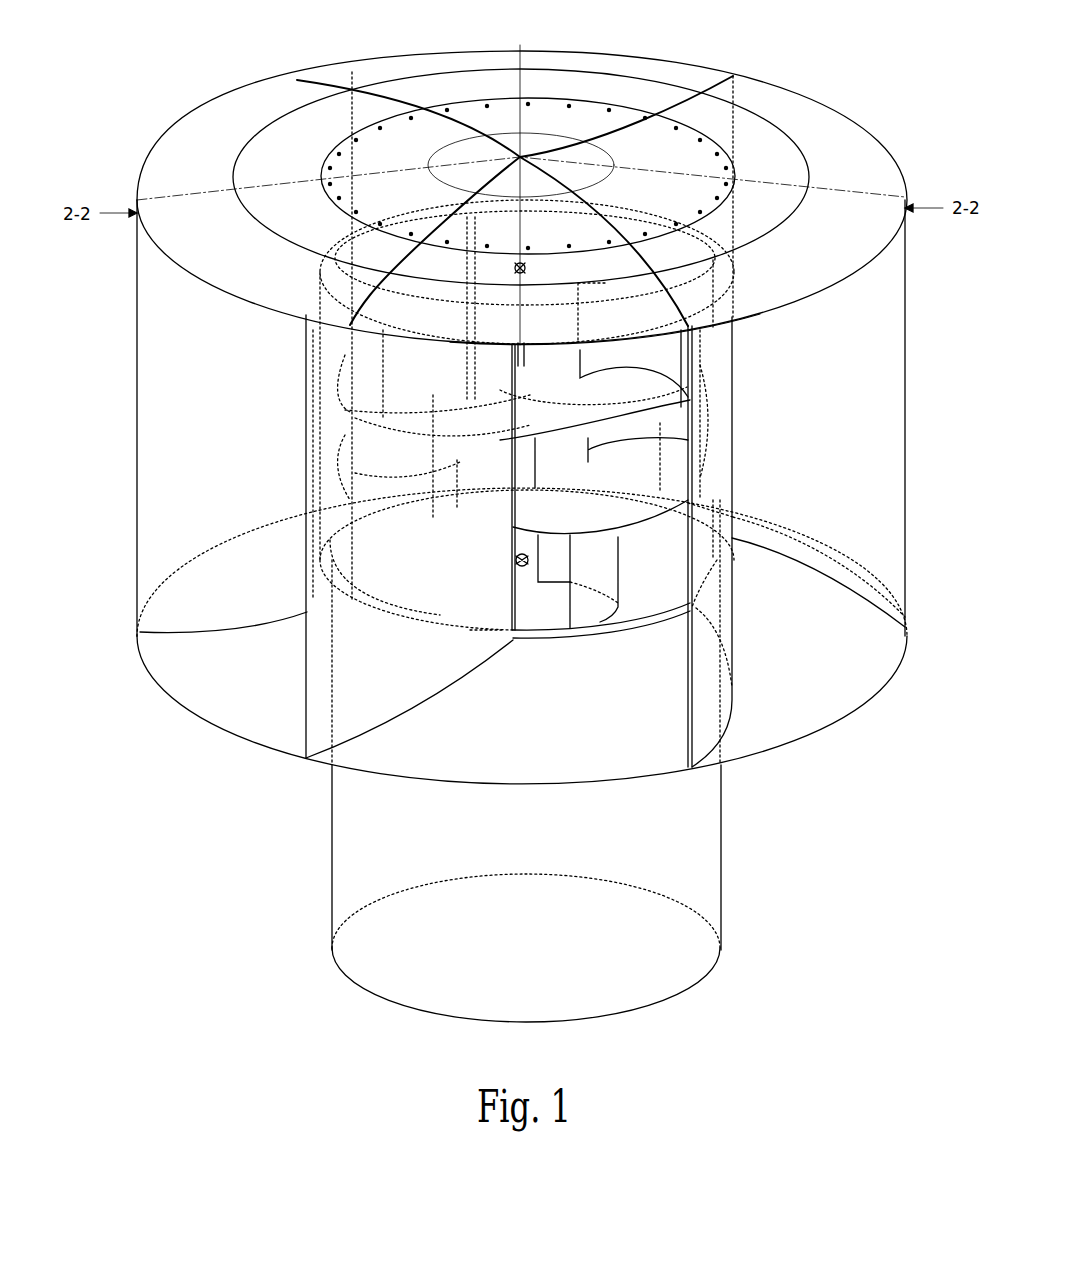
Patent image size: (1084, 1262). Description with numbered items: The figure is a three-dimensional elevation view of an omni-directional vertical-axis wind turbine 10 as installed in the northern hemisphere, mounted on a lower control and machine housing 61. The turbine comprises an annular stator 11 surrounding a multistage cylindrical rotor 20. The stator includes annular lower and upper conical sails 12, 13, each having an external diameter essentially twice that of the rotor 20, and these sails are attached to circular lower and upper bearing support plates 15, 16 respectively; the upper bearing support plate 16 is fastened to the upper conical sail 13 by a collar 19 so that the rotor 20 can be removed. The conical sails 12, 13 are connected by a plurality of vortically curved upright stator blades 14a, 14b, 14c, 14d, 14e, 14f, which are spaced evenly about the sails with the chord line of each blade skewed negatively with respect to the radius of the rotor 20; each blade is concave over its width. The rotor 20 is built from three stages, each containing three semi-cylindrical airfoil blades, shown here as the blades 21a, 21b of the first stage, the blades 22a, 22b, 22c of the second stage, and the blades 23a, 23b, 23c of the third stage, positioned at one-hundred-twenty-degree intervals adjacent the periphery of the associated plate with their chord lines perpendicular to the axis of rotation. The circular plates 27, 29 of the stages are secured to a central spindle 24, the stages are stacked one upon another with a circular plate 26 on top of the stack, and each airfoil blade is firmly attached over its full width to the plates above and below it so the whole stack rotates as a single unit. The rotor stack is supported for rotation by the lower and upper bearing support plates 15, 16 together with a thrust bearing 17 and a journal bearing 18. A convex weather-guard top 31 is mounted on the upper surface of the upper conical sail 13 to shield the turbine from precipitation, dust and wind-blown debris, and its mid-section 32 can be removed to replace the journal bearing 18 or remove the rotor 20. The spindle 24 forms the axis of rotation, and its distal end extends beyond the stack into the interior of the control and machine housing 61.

The omni-directional vertical-axis wind turbine 10 is at (520, 44).
The annular stator 11 is at (137, 431).
The lower conical sail 12 is at (870, 690).
The upper conical sail 13 is at (838, 272).
The stator blade 14a is at (690, 686).
The stator blade 14b is at (905, 540).
The stator blade 14c is at (735, 92).
The stator blade 14d is at (345, 86).
The stator blade 14e is at (138, 552).
The stator blade 14f is at (305, 690).
The lower bearing support plate 15 is at (552, 642).
The upper bearing support plate 16 is at (640, 218).
The thrust bearing 17 is at (524, 570).
The journal bearing 18 is at (512, 268).
The collar 19 is at (430, 207).
The cylindrical rotor 20 is at (500, 236).
The semi-cylindrical airfoil blade 21a is at (578, 318).
The semi-cylindrical airfoil blade 21b is at (465, 270).
The semi-cylindrical airfoil blade 22a is at (584, 425).
The semi-cylindrical airfoil blade 22b is at (382, 358).
The semi-cylindrical airfoil blade 22c is at (432, 464).
The semi-cylindrical airfoil blade 23a is at (656, 492).
The semi-cylindrical airfoil blade 23b is at (382, 576).
The semi-cylindrical airfoil blade 23c is at (612, 552).
The central spindle 24 is at (513, 553).
The circular plate 26 is at (716, 272).
The circular plate 27 is at (708, 396).
The circular plate 29 is at (715, 576).
The convex weather-guard top 31 is at (240, 158).
The mid-section of the top 32 is at (472, 98).
The control and machine housing 61 is at (727, 872).